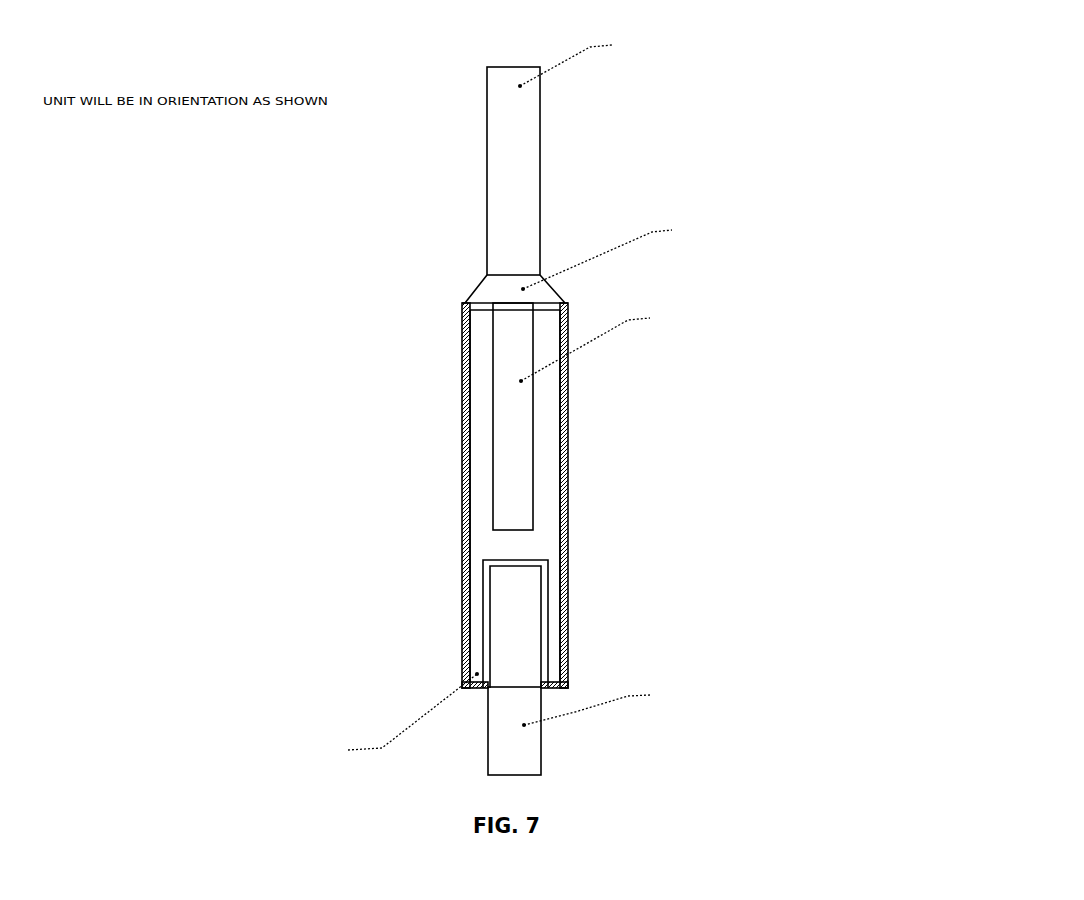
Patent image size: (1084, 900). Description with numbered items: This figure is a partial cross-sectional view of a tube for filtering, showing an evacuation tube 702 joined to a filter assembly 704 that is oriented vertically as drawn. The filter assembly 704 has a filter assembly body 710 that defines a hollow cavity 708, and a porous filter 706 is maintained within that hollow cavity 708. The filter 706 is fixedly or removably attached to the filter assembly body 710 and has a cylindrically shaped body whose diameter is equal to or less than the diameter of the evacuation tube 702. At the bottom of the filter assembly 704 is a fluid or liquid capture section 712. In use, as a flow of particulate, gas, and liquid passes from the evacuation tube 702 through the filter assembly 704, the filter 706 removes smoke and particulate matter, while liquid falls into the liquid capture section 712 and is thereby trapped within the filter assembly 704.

The evacuation tube 702 is at (474, 187).
The filter assembly 704 is at (449, 423).
The porous filter 706 is at (548, 479).
The hollow cavity 708 is at (465, 513).
The filter assembly body 710 is at (578, 538).
The fluid capture section 712 is at (490, 653).